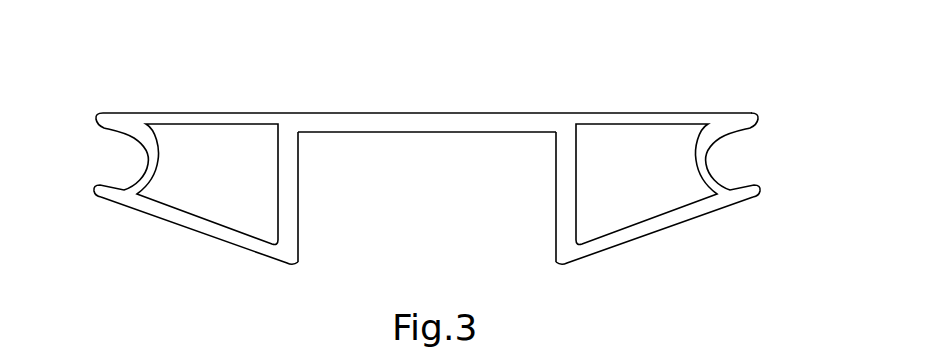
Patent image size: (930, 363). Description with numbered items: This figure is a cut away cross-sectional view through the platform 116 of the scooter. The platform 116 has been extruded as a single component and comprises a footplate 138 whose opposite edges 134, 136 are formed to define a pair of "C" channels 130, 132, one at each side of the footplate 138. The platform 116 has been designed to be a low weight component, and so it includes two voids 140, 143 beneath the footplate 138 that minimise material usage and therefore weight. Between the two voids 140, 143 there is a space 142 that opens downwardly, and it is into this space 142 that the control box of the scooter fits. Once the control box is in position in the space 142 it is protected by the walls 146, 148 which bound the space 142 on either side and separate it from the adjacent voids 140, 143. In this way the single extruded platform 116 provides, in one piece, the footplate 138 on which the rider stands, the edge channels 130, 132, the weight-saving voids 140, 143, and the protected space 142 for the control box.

The platform 116 is at (432, 136).
The C channel 130 is at (116, 176).
The C channel 132 is at (736, 170).
The edge 134 is at (147, 162).
The edge 136 is at (708, 157).
The footplate 138 is at (420, 97).
The void 140 is at (232, 188).
The space 142 is at (442, 196).
The void 143 is at (650, 185).
The wall 146 is at (293, 217).
The wall 148 is at (567, 218).